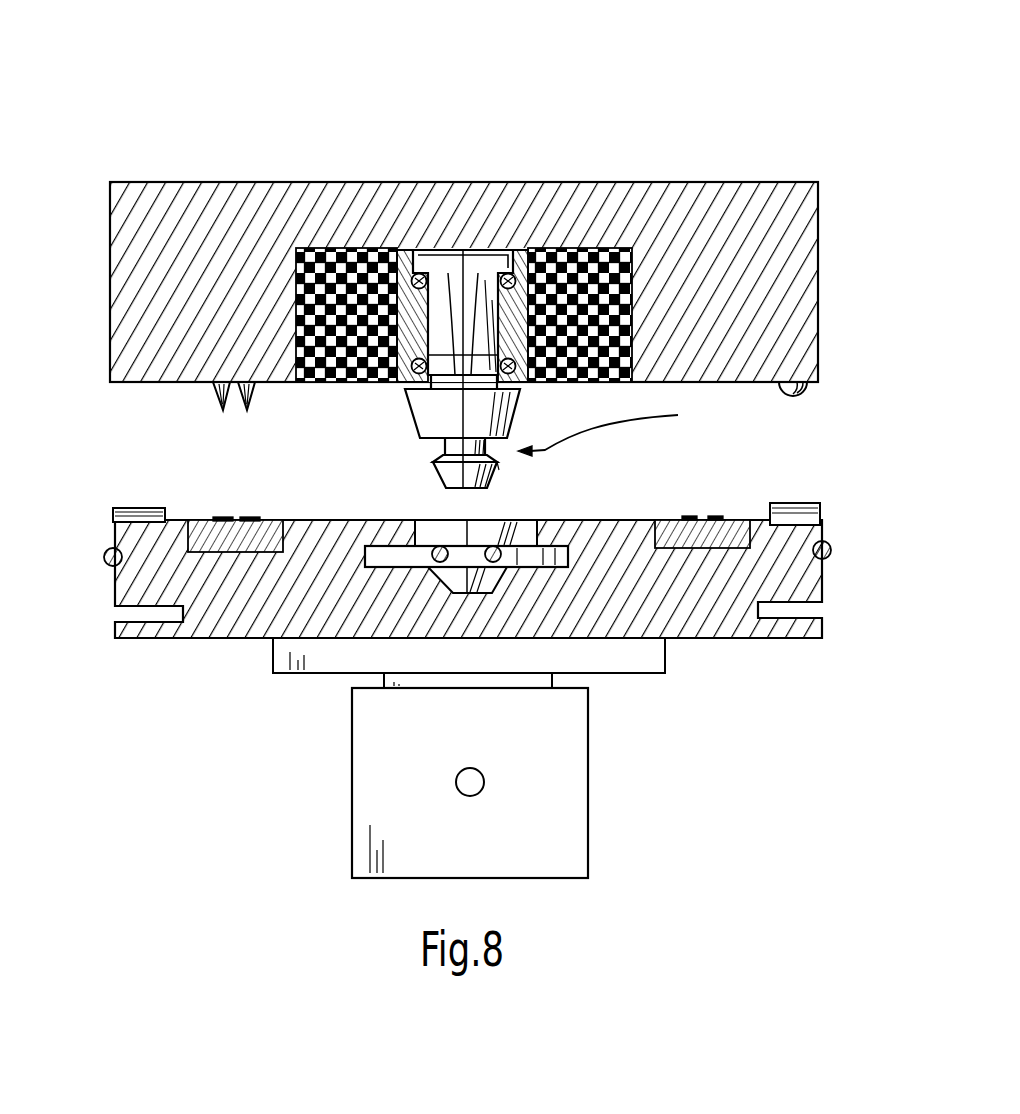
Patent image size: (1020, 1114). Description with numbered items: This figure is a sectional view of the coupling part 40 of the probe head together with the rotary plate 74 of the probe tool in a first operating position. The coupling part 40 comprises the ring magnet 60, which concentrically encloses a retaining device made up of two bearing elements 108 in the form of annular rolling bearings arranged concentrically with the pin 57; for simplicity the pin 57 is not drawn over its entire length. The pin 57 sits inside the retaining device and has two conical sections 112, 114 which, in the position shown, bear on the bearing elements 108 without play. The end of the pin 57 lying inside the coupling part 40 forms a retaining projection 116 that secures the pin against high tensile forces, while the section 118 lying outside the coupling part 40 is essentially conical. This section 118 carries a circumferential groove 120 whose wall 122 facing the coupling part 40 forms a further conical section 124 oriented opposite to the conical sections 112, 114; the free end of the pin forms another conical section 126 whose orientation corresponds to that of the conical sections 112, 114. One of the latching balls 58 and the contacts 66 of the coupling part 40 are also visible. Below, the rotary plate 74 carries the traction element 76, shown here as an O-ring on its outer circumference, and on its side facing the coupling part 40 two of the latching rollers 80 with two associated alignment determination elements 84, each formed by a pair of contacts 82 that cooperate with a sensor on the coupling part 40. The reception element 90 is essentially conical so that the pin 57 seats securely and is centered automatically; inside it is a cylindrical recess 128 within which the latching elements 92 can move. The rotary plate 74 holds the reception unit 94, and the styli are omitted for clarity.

The coupling part 40 is at (677, 182).
The pin 57 is at (483, 273).
The latching ball 58 is at (795, 396).
The ring magnet 60 is at (348, 270).
The contacts 66 is at (216, 396).
The rotary plate 74 is at (727, 638).
The traction element 76 is at (831, 550).
The latching rollers 80 is at (113, 519).
The contacts 82 is at (255, 517).
The alignment determination element 84 is at (278, 520).
The reception element 90 is at (508, 538).
The latching elements 92 is at (493, 546).
The reception unit 94 is at (545, 822).
The bearing elements 108 is at (457, 253).
The conical section 112 is at (462, 422).
The conical section 114 is at (468, 285).
The retaining projection 116 is at (463, 250).
The section 118 is at (408, 450).
The groove 120 is at (615, 427).
The wall 122 is at (497, 463).
The further conical section 124 is at (438, 458).
The further conical section 126 is at (432, 470).
The cylindrical recess 128 is at (368, 556).